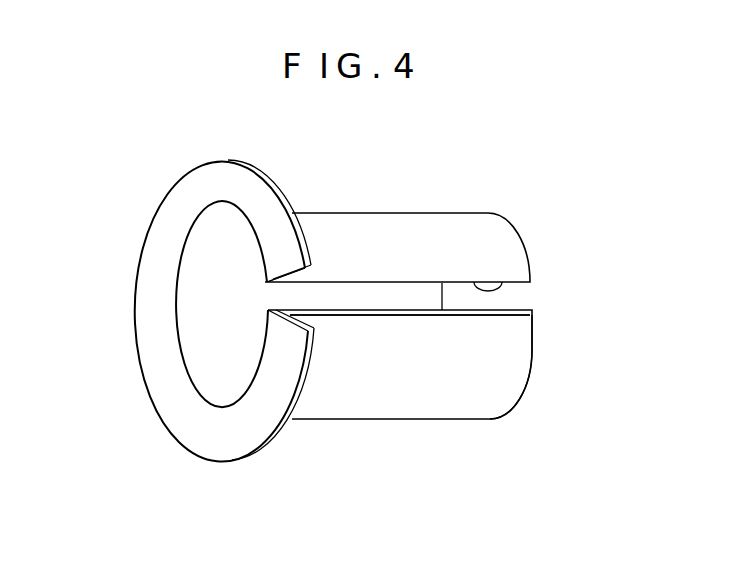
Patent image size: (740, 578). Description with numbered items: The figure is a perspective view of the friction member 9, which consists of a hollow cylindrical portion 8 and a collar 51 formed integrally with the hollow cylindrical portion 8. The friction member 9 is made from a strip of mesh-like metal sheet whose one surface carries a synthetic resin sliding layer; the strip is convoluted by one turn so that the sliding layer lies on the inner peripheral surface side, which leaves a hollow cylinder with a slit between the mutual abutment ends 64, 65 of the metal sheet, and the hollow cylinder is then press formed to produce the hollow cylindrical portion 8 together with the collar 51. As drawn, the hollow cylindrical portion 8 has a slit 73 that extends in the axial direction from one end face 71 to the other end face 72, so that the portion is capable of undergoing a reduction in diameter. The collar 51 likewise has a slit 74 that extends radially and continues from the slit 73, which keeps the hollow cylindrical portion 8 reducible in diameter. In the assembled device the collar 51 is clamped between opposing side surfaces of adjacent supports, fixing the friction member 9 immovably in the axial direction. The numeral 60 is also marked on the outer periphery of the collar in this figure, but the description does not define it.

The hollow cylindrical portion 8 is at (380, 243).
The friction member 9 is at (388, 432).
The collar 51 is at (163, 247).
The outer peripheral surface of flange 60 is at (280, 430).
The abutment end 64 is at (500, 282).
The abutment end 65 is at (492, 309).
The end face 71 is at (530, 353).
The end face 72 is at (273, 341).
The slit 73 is at (403, 297).
The slit 74 is at (282, 297).